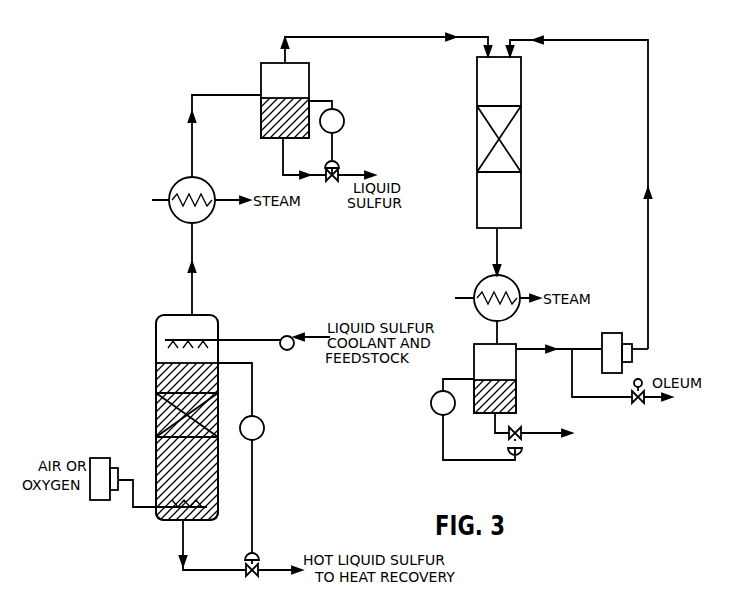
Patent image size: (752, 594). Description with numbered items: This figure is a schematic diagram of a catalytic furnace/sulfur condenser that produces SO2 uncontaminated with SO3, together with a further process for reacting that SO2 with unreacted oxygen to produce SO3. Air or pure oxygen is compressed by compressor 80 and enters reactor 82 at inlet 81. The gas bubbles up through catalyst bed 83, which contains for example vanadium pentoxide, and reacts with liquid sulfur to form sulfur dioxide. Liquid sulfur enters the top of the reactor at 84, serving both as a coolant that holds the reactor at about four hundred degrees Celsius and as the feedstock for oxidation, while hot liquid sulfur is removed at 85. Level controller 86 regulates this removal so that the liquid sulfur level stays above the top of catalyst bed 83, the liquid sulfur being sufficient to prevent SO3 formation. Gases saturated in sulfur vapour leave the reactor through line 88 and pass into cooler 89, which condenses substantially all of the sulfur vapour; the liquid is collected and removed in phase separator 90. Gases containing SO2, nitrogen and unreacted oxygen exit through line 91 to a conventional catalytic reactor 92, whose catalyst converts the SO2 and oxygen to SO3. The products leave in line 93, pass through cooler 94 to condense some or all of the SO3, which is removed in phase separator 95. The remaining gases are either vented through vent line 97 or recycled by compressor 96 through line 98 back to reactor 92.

The compressor 80 is at (105, 501).
The inlet 81 is at (145, 509).
The reactor 82 is at (156, 378).
The catalyst bed 83 is at (216, 406).
The liquid sulfur inlet 84 is at (249, 340).
The hot liquid sulfur outlet 85 is at (183, 550).
The level controller 86 is at (260, 420).
The gas exit line 88 is at (192, 290).
The cooler 89 is at (212, 206).
The phase separator 90 is at (309, 86).
The gas line 91 is at (366, 37).
The catalytic reactor 92 is at (477, 137).
The product line 93 is at (497, 244).
The cooler 94 is at (470, 295).
The phase separator 95 is at (474, 380).
The compressor 96 is at (582, 342).
The vent line 97 is at (643, 401).
The recycle line 98 is at (648, 128).